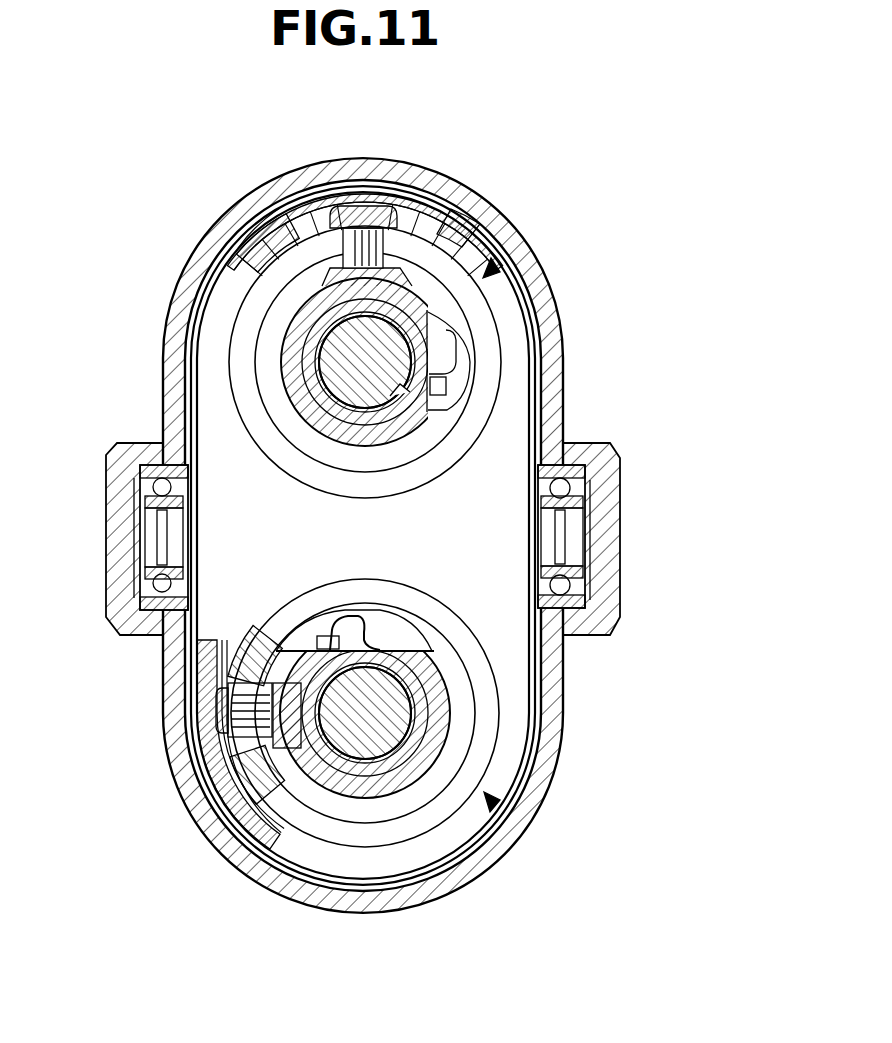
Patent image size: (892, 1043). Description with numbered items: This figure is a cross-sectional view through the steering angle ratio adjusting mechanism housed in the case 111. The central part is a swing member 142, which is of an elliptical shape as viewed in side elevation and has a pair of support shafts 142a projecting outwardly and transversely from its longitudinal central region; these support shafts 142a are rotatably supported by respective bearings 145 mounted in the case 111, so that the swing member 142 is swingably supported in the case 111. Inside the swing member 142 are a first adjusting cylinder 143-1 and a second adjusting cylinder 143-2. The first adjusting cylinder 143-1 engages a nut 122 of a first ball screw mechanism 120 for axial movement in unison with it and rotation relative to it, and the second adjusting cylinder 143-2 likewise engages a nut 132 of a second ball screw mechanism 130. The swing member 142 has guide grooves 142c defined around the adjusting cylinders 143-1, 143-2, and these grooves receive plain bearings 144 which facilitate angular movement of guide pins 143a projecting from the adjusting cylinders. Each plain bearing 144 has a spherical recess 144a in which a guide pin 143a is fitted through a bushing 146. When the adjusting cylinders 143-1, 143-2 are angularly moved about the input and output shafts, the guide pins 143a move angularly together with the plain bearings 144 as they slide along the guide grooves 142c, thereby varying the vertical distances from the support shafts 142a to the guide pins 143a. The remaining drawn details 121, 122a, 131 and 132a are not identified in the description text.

The case 111 is at (541, 296).
The first ball screw mechanism 120 is at (492, 262).
The first shaft 121 is at (324, 488).
The nut 122 is at (298, 304).
The first hub retainer 122a is at (452, 366).
The second ball screw mechanism 130 is at (520, 826).
The second shaft 131 is at (432, 880).
The nut 132 is at (432, 632).
The second hub retainer 132a is at (380, 630).
The swing member 142 is at (506, 636).
The support shafts 142a is at (146, 536).
The guide grooves 142c is at (268, 213).
The first adjusting cylinder 143-1 is at (284, 369).
The second adjusting cylinder 143-2 is at (346, 770).
The guide pins 143a is at (356, 204).
The plain bearings 144 is at (456, 216).
The spherical recesses 144a is at (419, 198).
The bearings 145 is at (146, 462).
The bushings 146 is at (306, 198).